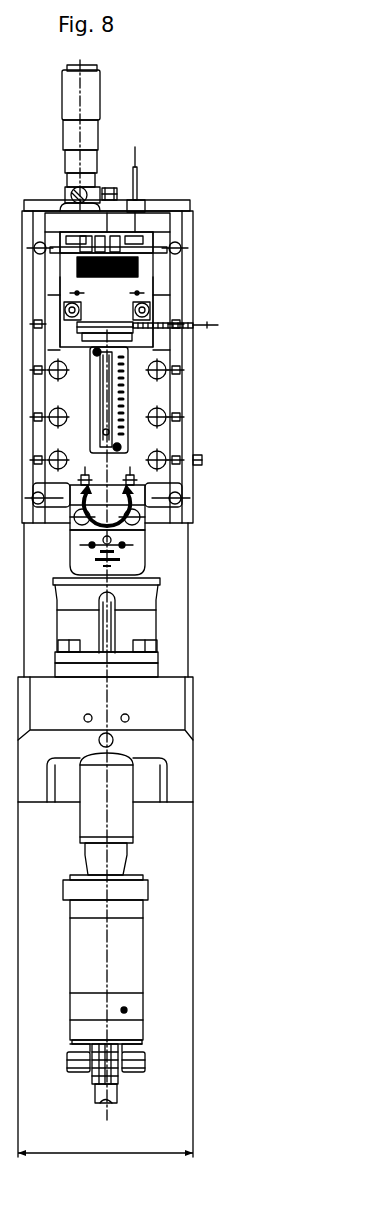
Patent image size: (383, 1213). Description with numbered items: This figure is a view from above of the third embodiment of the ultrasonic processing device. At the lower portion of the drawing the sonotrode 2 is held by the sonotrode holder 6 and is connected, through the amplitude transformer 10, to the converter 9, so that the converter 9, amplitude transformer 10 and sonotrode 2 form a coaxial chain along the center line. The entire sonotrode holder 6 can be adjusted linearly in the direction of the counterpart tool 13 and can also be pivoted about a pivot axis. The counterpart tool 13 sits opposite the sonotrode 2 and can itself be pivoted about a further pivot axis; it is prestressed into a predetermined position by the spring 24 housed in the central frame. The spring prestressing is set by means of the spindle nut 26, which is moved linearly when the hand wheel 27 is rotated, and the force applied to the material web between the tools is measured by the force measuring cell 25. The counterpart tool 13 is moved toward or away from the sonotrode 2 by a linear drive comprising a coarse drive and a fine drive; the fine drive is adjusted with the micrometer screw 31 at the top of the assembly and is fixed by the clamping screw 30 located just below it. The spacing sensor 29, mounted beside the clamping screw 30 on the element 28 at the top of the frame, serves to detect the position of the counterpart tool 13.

The sonotrode 2 is at (142, 598).
The sonotrode holder 6 is at (170, 703).
The converter 9 is at (127, 948).
The amplitude transformer 10 is at (120, 823).
The counterpart tool 13 is at (128, 556).
The spring 24 is at (122, 402).
The force measuring cell 25 is at (155, 318).
The spindle nut 26 is at (128, 380).
The hand wheel 27 is at (155, 258).
The top plate 28 is at (145, 222).
The spacing sensor 29 is at (140, 203).
The clamping screw 30 is at (85, 192).
The micrometer screw 31 is at (87, 100).